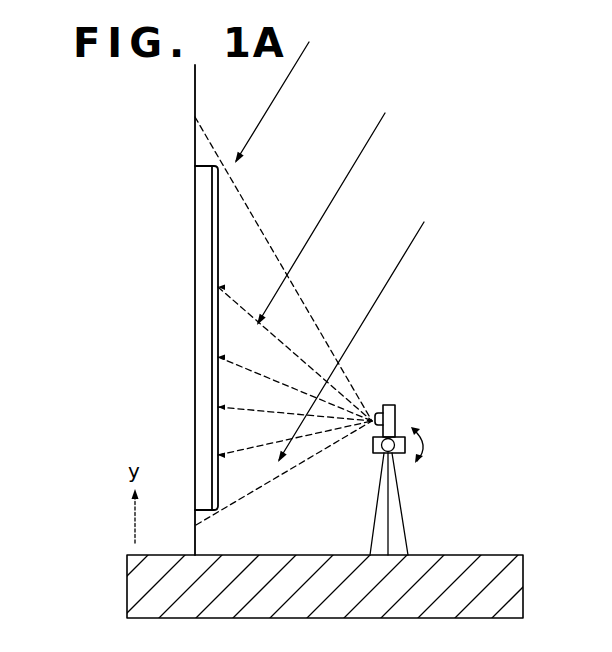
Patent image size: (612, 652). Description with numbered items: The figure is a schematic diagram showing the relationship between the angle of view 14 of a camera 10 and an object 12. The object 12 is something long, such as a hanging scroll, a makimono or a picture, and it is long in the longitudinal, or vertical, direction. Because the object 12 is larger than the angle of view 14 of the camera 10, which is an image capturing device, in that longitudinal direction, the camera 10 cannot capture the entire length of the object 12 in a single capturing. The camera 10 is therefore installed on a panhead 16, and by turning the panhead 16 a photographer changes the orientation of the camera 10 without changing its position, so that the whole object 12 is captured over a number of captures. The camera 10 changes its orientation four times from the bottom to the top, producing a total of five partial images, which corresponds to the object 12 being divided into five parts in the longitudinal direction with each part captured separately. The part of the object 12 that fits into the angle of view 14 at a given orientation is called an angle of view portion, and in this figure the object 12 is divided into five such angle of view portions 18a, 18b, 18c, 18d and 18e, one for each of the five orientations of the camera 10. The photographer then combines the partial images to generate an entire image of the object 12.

The camera 10 is at (396, 413).
The object 12 is at (195, 283).
The angle of view 14 is at (320, 433).
The panhead 16 is at (402, 466).
The angle of view portion 18a is at (218, 483).
The angle of view portion 18b is at (218, 440).
The angle of view portion 18c is at (218, 383).
The angle of view portion 18d is at (218, 322).
The angle of view portion 18e is at (218, 225).